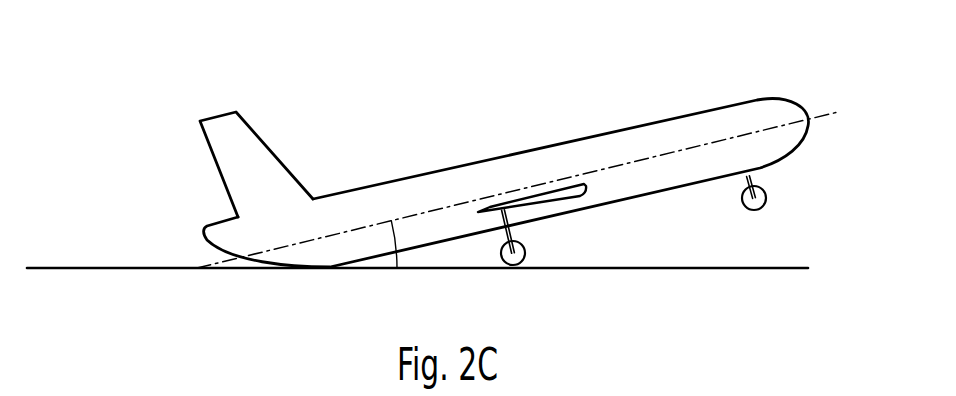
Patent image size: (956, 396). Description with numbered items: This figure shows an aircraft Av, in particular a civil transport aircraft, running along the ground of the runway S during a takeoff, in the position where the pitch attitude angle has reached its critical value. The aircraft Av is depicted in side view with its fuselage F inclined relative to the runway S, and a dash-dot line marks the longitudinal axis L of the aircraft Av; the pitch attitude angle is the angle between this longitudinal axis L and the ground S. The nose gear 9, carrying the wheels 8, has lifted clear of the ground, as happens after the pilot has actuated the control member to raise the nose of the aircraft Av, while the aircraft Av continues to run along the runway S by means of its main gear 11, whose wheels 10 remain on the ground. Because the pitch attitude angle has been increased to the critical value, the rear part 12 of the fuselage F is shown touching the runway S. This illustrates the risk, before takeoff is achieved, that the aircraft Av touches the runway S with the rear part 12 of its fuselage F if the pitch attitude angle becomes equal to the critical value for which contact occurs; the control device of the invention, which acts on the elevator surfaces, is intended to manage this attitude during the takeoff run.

The wheels of the nose gear 8 is at (760, 210).
The nose gear 9 is at (765, 178).
The wheels of the main gear 10 is at (525, 252).
The main gear 11 is at (492, 245).
The rear part of the fuselage 12 is at (323, 272).
The fuselage F is at (635, 200).
The longitudinal axis L is at (647, 158).
The ground of the runway S is at (123, 270).
The aircraft Av is at (504, 146).